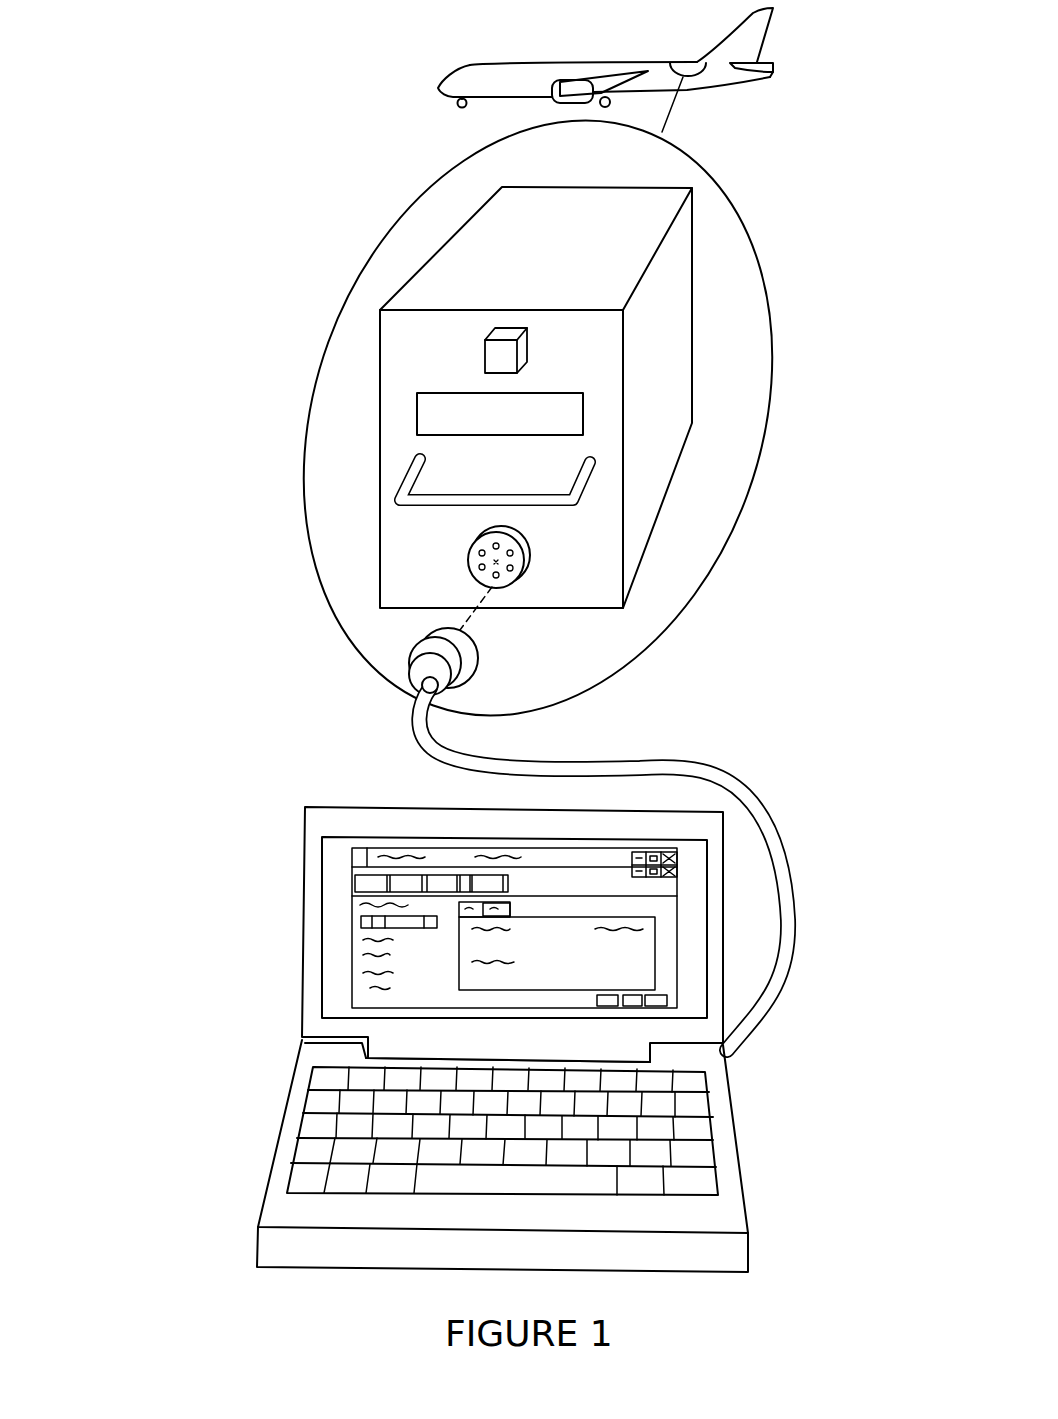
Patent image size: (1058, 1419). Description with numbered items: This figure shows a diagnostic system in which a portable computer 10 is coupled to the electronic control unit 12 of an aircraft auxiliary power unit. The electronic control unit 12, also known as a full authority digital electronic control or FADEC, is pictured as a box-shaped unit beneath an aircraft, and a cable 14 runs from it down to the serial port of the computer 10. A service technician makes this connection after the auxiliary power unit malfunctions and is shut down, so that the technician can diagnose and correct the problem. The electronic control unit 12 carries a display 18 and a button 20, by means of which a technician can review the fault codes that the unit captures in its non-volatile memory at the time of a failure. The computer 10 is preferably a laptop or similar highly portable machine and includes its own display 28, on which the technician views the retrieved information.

The computer 10 is at (735, 1115).
The electronic control unit 12 is at (690, 350).
The cable 14 is at (670, 763).
The display 18 is at (583, 421).
The button 20 is at (492, 350).
The display 28 is at (322, 870).